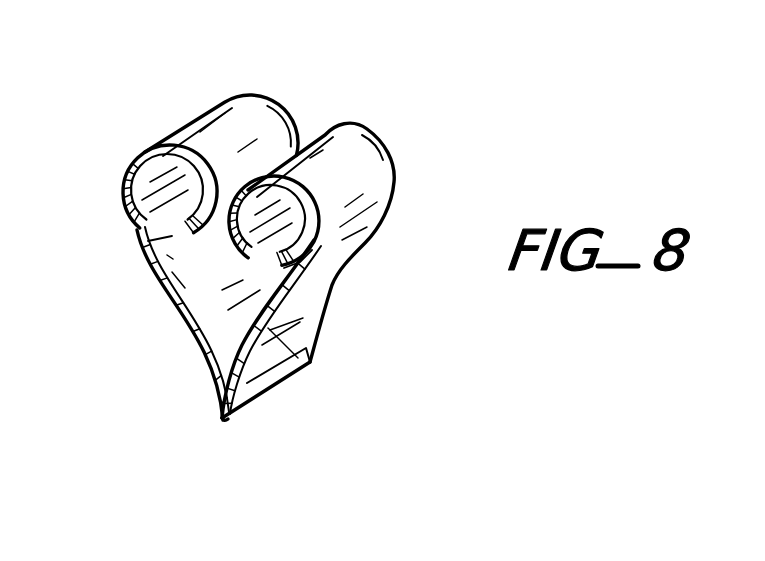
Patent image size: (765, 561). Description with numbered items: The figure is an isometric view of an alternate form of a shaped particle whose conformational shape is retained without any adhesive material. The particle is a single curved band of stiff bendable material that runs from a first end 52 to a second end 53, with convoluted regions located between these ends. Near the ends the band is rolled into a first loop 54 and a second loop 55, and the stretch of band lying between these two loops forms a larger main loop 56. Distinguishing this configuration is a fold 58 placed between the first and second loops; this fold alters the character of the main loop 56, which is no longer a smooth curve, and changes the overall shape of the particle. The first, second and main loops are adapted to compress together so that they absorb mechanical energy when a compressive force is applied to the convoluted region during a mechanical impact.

The first end 52 is at (157, 233).
The second end 53 is at (322, 262).
The first loop 54 is at (332, 145).
The second loop 55 is at (207, 130).
The main loop 56 is at (190, 332).
The fold 58 is at (261, 392).